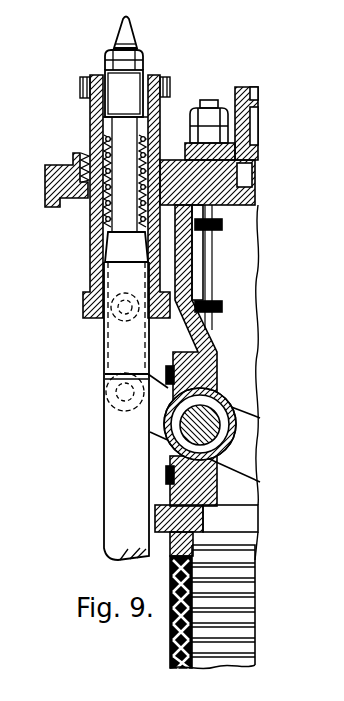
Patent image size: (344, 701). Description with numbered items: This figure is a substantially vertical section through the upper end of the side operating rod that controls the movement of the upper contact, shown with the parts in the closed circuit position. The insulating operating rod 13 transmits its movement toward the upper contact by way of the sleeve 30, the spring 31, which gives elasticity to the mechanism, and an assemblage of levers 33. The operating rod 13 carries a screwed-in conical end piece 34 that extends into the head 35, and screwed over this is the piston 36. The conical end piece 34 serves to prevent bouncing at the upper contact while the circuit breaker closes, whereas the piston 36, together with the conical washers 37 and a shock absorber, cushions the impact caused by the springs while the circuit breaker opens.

The insulating operating rod 13 is at (104, 509).
The sleeve 30 is at (91, 257).
The spring 31 is at (93, 223).
The assemblage of levers 33 is at (238, 413).
The conical end piece 34 is at (104, 329).
The head 35 is at (134, 33).
The piston 36 is at (137, 86).
The conical washers 37 is at (85, 152).